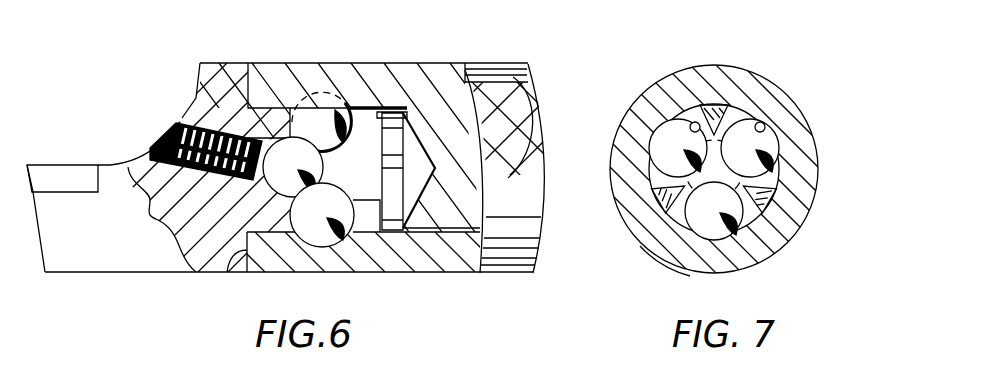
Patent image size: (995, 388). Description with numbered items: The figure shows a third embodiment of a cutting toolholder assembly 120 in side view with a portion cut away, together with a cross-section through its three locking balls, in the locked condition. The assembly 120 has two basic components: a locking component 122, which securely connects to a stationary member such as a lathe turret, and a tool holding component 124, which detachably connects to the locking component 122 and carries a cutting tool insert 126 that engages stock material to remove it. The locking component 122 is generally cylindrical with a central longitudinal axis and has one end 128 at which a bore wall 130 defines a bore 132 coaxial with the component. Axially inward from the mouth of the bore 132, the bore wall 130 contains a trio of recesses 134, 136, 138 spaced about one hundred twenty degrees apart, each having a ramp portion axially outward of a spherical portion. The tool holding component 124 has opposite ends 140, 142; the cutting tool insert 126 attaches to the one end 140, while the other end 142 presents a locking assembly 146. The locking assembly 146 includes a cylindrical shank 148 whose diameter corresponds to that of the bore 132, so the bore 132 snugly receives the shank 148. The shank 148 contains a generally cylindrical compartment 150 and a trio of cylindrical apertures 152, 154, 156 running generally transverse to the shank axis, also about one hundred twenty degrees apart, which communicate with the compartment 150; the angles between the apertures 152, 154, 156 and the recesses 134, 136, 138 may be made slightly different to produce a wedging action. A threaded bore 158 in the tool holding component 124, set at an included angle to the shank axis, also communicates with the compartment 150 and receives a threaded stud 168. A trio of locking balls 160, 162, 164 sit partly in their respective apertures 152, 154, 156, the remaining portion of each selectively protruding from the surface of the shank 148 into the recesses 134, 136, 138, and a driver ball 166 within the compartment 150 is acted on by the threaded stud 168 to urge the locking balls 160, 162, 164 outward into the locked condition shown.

In FIG. 6, the cutting toolholder assembly 120 is at (160, 308).
In FIG. 6, the locking component 122 is at (498, 135).
In FIG. 6, the tool holding component 124 is at (77, 258).
In FIG. 6, the cutting tool insert 126 is at (62, 163).
In FIG. 6, the one end 128 is at (230, 273).
In FIG. 6, the bore wall 130 is at (360, 267).
In FIG. 6, the bore 132 is at (492, 85).
In FIG. 7, the recess 134 is at (680, 97).
In FIG. 7, the recess 136 is at (797, 100).
In FIG. 7, the recess 138 is at (678, 268).
In FIG. 6, the one end 140 is at (36, 233).
In FIG. 6, the other end 142 is at (520, 273).
In FIG. 6, the locking assembly 146 is at (110, 57).
In FIG. 6, the cylindrical shank 148 is at (420, 276).
In FIG. 6, the cylindrical compartment 150 is at (398, 110).
In FIG. 7, the cylindrical aperture 152 is at (733, 72).
In FIG. 7, the cylindrical aperture 154 is at (766, 170).
In FIG. 7, the cylindrical aperture 156 is at (655, 220).
In FIG. 6, the threaded bore 158 is at (180, 122).
In FIG. 6, the locking ball 160 is at (358, 160).
In FIG. 7, the locking ball 160 is at (628, 188).
In FIG. 7, the locking ball 162 is at (793, 122).
In FIG. 6, the locking ball 164 is at (330, 190).
In FIG. 7, the locking ball 164 is at (760, 213).
In FIG. 6, the driver ball 166 is at (196, 110).
In FIG. 6, the threaded stud 168 is at (168, 133).